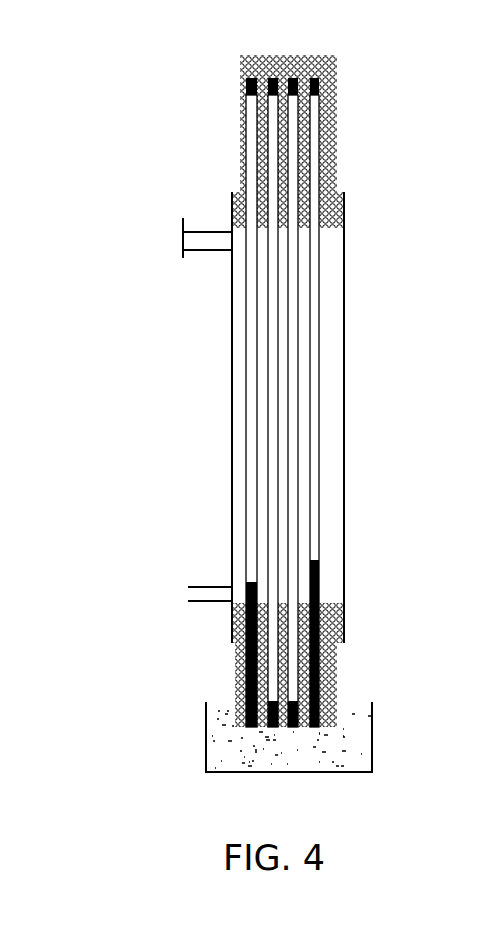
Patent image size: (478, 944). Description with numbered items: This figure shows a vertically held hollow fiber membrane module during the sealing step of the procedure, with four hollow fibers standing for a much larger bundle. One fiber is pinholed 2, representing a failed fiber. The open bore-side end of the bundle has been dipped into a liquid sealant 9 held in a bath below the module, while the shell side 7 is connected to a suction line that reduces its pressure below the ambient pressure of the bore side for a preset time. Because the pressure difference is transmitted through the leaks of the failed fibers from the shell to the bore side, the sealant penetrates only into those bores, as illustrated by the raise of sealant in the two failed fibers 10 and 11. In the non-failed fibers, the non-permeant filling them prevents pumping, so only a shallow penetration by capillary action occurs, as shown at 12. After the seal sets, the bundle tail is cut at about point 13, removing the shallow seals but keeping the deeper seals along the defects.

The pinholed hollow fiber 2 is at (238, 510).
The shell side 7 is at (176, 592).
The liquid sealant 9 is at (343, 747).
The sealant raise in failed fiber 10 is at (246, 538).
The sealant raise in failed fiber 11 is at (330, 317).
The shallow sealant penetration in non-failed fibers 12 is at (272, 727).
The cutting point 13 is at (224, 683).